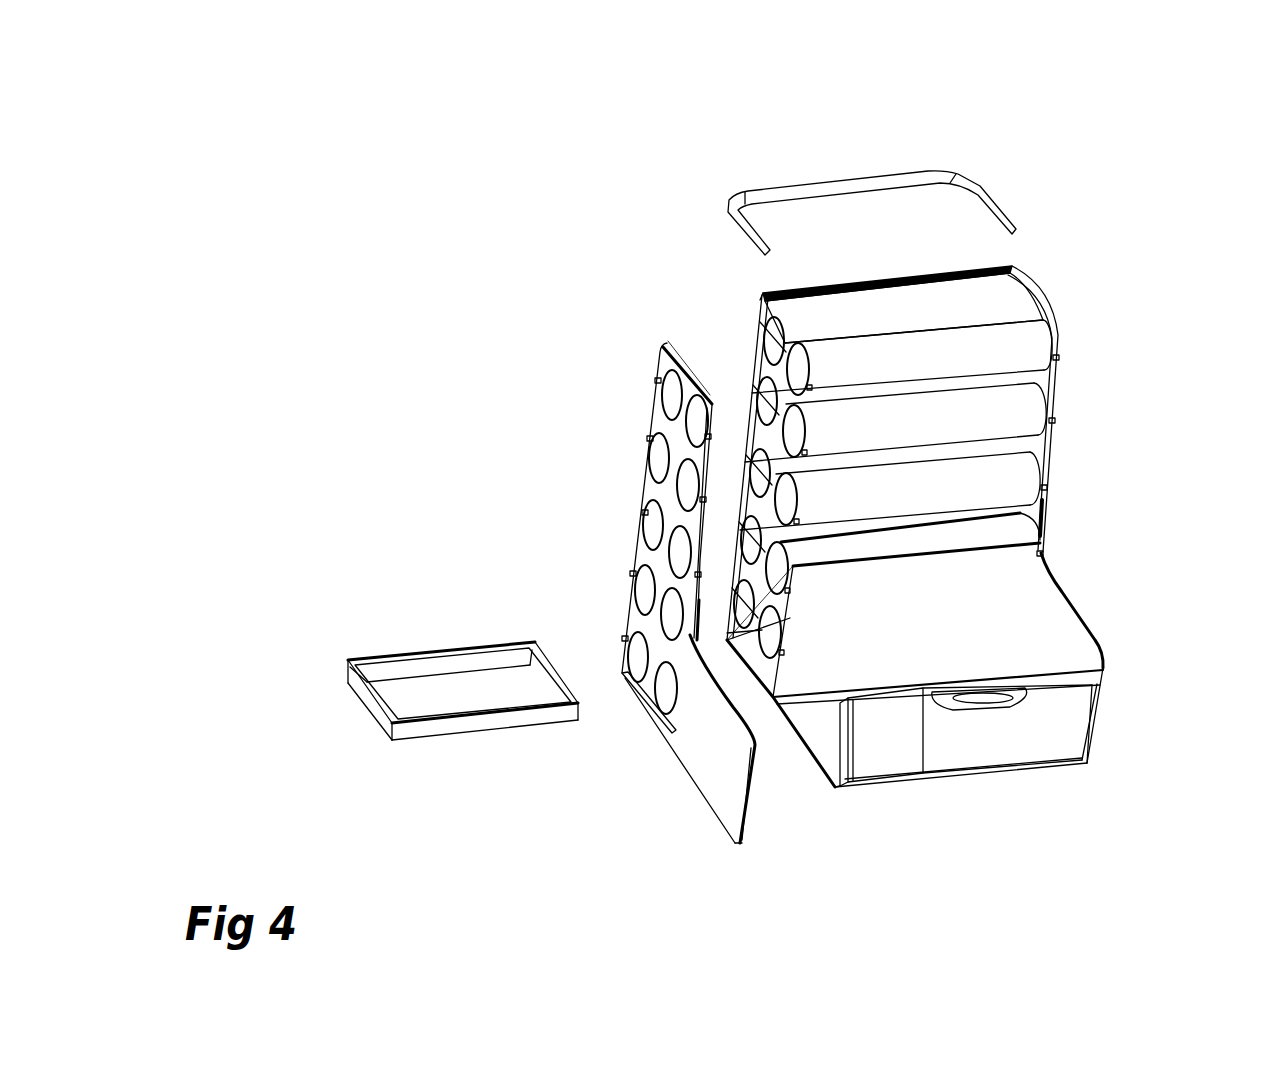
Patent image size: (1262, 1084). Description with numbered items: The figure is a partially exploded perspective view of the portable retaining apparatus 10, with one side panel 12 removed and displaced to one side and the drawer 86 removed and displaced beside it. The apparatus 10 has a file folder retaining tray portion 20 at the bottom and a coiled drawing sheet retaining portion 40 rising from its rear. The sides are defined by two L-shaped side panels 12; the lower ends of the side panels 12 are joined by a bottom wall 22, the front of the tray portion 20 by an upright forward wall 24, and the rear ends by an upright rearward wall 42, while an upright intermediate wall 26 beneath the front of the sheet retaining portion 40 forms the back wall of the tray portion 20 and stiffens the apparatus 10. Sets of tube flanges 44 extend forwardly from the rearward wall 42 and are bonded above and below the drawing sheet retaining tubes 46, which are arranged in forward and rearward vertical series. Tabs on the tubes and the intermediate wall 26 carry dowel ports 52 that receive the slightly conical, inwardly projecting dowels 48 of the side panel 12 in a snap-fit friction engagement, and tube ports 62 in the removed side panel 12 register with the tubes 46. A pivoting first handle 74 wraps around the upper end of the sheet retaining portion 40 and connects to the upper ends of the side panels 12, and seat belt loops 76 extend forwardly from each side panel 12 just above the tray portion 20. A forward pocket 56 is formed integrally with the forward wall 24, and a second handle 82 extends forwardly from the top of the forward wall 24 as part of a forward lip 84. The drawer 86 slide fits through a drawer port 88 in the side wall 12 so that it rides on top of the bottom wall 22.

The portable retaining apparatus 10 is at (1122, 185).
The side panel 12 is at (1098, 643).
The file folder retaining tray portion 20 is at (1152, 601).
The bottom wall 22 is at (731, 673).
The forward wall 24 is at (1035, 745).
The intermediate wall 26 is at (883, 618).
The coiled drawing sheet retaining portion 40 is at (1150, 390).
The rearward wall 42 is at (867, 281).
The tube flange 44 is at (1014, 266).
The drawing sheet retaining tube 46 is at (878, 372).
The dowel 48 is at (658, 380).
The dowel port 52 is at (765, 330).
The forward pocket 56 is at (910, 750).
The tube port 62 is at (690, 418).
The first handle 74 is at (850, 182).
The seat belt loop 76 is at (1046, 521).
The second handle 82 is at (960, 718).
The forward lip 84 is at (1085, 722).
The drawer 86 is at (450, 725).
The drawer port 88 is at (662, 740).